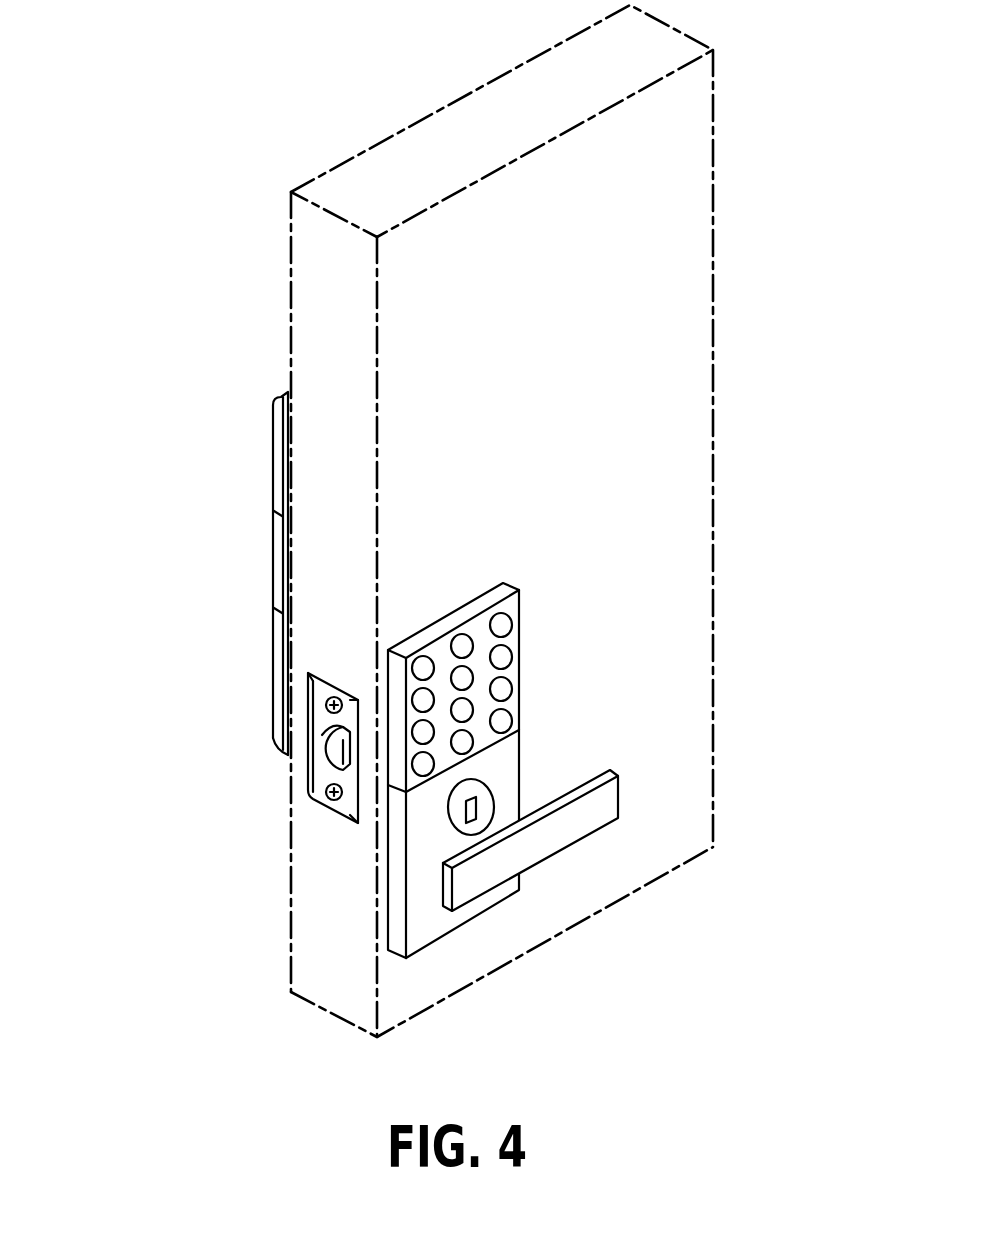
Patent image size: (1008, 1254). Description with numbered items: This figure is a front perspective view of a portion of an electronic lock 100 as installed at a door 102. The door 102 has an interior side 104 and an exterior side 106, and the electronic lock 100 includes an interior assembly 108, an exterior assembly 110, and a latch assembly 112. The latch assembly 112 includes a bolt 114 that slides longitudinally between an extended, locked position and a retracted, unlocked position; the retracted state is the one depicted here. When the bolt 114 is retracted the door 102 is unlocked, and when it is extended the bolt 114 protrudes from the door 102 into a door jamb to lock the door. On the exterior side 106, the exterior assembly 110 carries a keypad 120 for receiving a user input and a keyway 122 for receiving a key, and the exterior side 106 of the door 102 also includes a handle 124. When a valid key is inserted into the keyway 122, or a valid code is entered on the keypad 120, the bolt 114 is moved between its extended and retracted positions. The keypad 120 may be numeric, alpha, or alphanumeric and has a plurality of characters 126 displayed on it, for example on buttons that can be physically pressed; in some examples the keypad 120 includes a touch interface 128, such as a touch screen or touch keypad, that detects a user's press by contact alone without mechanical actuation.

The electronic lock 100 is at (257, 420).
The door 102 is at (483, 145).
The interior side 104 is at (296, 272).
The exterior side 106 is at (640, 160).
The interior assembly 108 is at (258, 493).
The exterior assembly 110 is at (445, 598).
The latch assembly 112 is at (328, 807).
The bolt 114 is at (330, 747).
The keypad 120 is at (535, 672).
The keyway 122 is at (446, 824).
The handle 124 is at (483, 870).
The characters 126 is at (503, 688).
The touch interface 128 is at (514, 705).